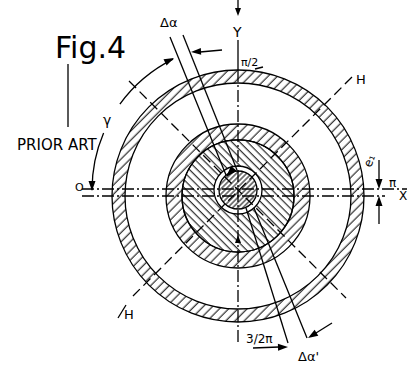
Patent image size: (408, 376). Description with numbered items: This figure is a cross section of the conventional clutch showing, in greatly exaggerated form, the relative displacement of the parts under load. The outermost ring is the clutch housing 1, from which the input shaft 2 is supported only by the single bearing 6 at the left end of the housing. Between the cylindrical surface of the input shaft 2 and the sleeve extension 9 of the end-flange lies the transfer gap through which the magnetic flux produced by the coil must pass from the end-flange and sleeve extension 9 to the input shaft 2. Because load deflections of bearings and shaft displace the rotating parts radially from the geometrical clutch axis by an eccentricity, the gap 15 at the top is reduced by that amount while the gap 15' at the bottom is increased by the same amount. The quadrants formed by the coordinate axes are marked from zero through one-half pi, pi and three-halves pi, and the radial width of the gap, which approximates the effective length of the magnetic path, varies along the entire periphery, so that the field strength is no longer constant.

The clutch housing 1 is at (300, 87).
The input shaft 2 is at (172, 216).
The bearing 6 is at (356, 308).
The sleeve extension 9 is at (296, 152).
The transfer gap 15 is at (245, 145).
The transfer gap at the bottom 15' is at (220, 260).